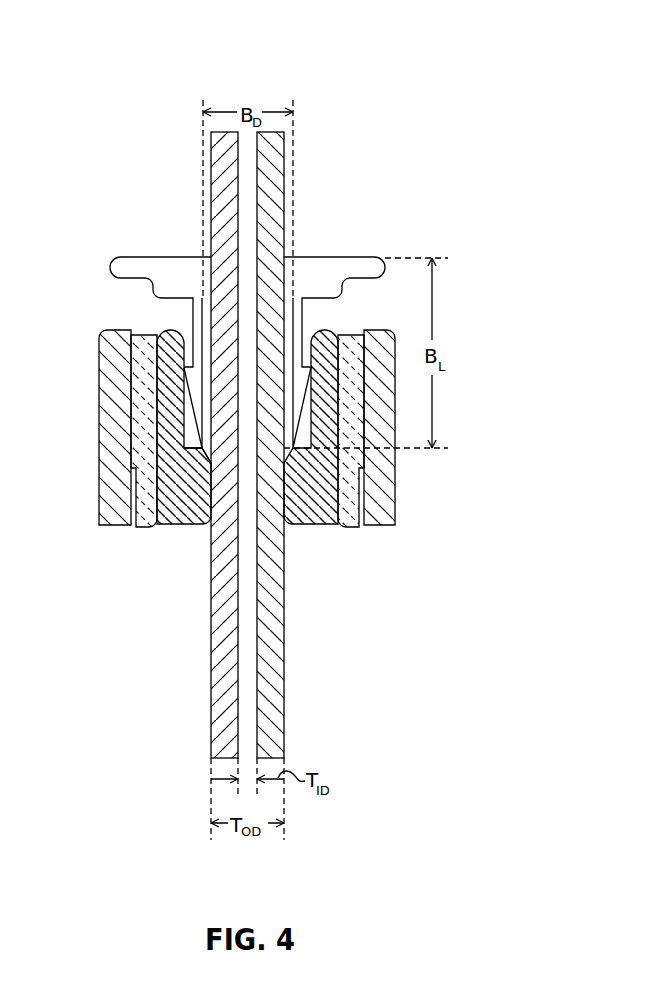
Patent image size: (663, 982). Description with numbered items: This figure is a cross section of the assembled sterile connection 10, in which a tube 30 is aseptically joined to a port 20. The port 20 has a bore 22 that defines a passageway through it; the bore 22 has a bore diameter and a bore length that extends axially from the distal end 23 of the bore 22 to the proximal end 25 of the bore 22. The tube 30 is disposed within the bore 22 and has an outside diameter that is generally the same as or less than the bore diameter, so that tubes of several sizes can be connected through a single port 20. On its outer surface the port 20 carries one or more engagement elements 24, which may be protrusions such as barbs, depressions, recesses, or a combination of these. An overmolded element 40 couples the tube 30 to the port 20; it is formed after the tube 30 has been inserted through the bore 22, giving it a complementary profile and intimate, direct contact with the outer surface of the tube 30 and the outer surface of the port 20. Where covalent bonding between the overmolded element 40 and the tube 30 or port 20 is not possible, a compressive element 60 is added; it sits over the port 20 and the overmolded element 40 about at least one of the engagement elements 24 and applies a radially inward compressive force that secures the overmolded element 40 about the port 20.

The sterile connection 10 is at (378, 48).
The port 20 is at (303, 265).
The bore 22 is at (204, 453).
The distal end 23 is at (197, 458).
The engagement element 24 is at (185, 378).
The proximal end 25 is at (207, 252).
The tube 30 is at (272, 608).
The overmolded element 40 is at (331, 493).
The compressive element 60 is at (388, 499).